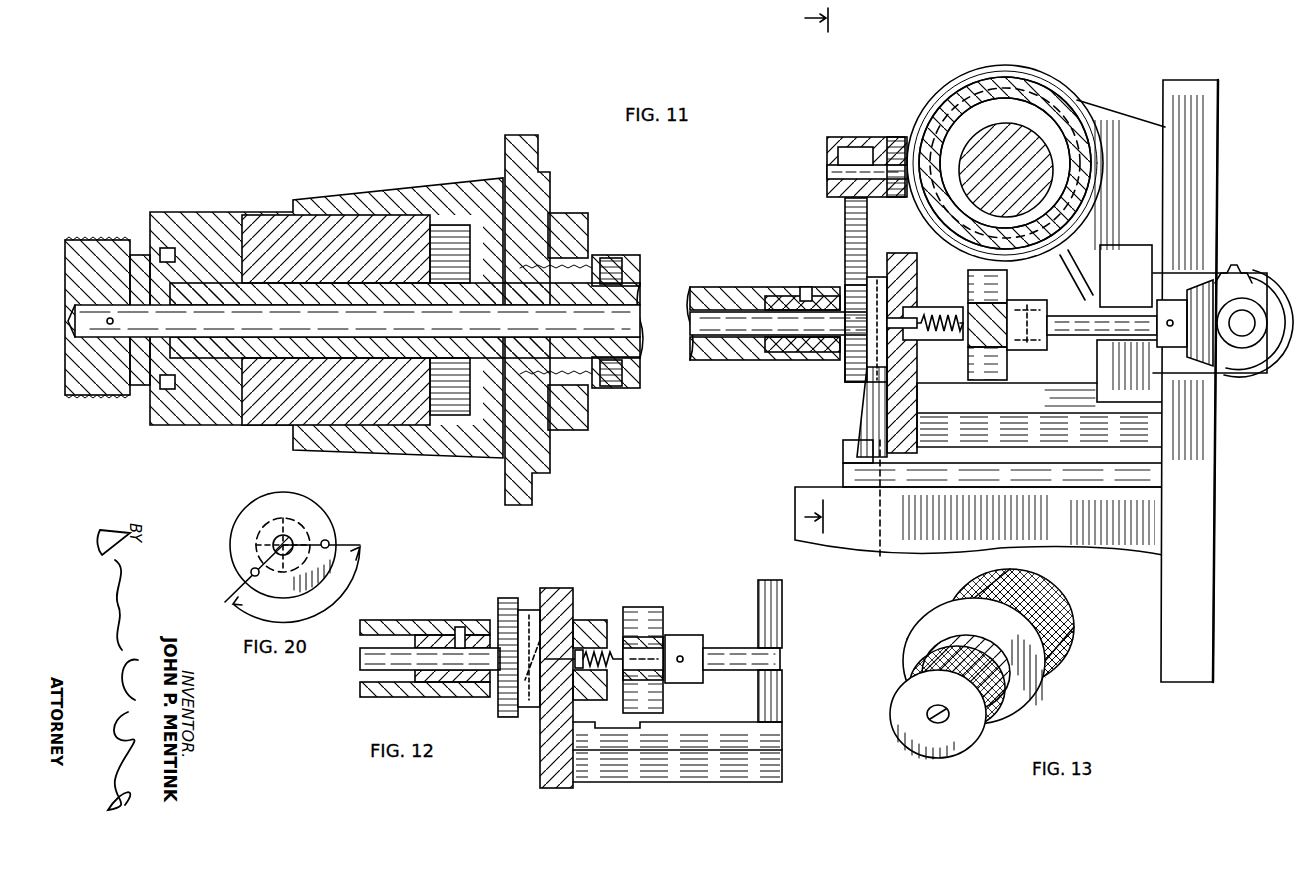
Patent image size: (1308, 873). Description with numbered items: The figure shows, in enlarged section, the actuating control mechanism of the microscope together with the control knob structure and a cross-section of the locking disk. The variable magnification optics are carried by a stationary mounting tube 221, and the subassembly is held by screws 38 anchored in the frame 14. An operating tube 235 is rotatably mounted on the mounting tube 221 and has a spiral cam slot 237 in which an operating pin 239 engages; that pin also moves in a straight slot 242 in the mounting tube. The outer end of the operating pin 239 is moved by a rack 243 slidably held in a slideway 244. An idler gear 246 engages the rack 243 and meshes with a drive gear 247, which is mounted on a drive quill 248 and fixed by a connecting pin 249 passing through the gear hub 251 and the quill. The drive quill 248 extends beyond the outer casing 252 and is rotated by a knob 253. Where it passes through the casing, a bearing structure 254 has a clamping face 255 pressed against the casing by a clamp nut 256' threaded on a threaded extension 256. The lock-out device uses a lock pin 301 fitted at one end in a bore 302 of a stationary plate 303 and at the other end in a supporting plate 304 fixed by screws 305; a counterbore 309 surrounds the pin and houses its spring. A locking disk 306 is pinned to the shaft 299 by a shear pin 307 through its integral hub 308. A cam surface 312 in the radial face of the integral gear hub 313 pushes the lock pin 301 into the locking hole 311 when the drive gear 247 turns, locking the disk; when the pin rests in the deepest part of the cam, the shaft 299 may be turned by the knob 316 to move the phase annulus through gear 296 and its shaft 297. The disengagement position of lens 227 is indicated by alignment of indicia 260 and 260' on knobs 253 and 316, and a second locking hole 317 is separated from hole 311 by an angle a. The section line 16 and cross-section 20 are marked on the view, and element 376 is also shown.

In FIG. 11, the frame 14 is at (1001, 527).
In FIG. 11, the section line 16 is at (842, 282).
In FIG. 11, the carriage 20 is at (1035, 342).
In FIG. 11, the screws 38 is at (862, 456).
In FIG. 11, the mounting tube 221 is at (1085, 178).
In FIG. 11, the lens 227 is at (1021, 172).
In FIG. 11, the operating tube 235 is at (980, 84).
In FIG. 11, the spiral cam slot 237 is at (958, 128).
In FIG. 11, the operating pin 239 is at (880, 156).
In FIG. 11, the straight slot 242 is at (894, 145).
In FIG. 11, the rack 243 is at (838, 160).
In FIG. 11, the slideway 244 is at (830, 178).
In FIG. 11, the idler gear 246 is at (845, 225).
In FIG. 11, the drive gear 247 is at (845, 282).
In FIG. 12, the drive gear 247 is at (505, 616).
In FIG. 11, the drive quill 248 is at (233, 345).
In FIG. 12, the drive quill 248 is at (385, 628).
In FIG. 11, the connecting pin 249 is at (804, 292).
In FIG. 12, the connecting pin 249 is at (459, 628).
In FIG. 11, the gear hub 251 is at (814, 347).
In FIG. 12, the gear hub 251 is at (460, 675).
In FIG. 11, the outer casing 252 is at (512, 163).
In FIG. 11, the knob 253 is at (171, 210).
In FIG. 13, the knob 253 is at (928, 585).
In FIG. 11, the bearing structure 254 is at (494, 286).
In FIG. 11, the clamping face 255 is at (522, 230).
In FIG. 11, the threaded extension 256 is at (580, 309).
In FIG. 11, the clamp nut 256' is at (591, 317).
In FIG. 13, the indicium 260 is at (966, 671).
In FIG. 13, the indicium 260' is at (957, 668).
In FIG. 11, the gear 296 is at (1242, 271).
In FIG. 11, the shaft 297 is at (1244, 335).
In FIG. 11, the shaft 299 is at (735, 337).
In FIG. 12, the shaft 299 is at (359, 668).
In FIG. 11, the lock pin 301 is at (870, 395).
In FIG. 12, the lock pin 301 is at (646, 614).
In FIG. 12, the bore 302 is at (530, 682).
In FIG. 11, the stationary plate 303 is at (895, 415).
In FIG. 12, the stationary plate 303 is at (550, 760).
In FIG. 11, the supporting plate 304 is at (987, 352).
In FIG. 12, the supporting plate 304 is at (622, 630).
In FIG. 11, the screws 305 is at (936, 309).
In FIG. 11, the locking disk 306 is at (985, 288).
In FIG. 12, the locking disk 306 is at (662, 616).
In FIG. 20, the locking disk 306 is at (256, 515).
In FIG. 11, the shear pin 307 is at (1050, 305).
In FIG. 12, the shear pin 307 is at (684, 655).
In FIG. 11, the hub 308 is at (1065, 335).
In FIG. 12, the hub 308 is at (706, 648).
In FIG. 12, the counterbore 309 is at (591, 668).
In FIG. 11, the locking hole 311 is at (1023, 350).
In FIG. 12, the locking hole 311 is at (678, 680).
In FIG. 20, the locking hole 311 is at (329, 543).
In FIG. 11, the cam surface 312 is at (880, 283).
In FIG. 12, the gear hub 313 is at (530, 608).
In FIG. 13, the knob 316 is at (912, 702).
In FIG. 20, the second locking hole 317 is at (250, 572).
In FIG. 11, the knob 376 is at (120, 395).
In FIG. 20, the angle a is at (336, 598).